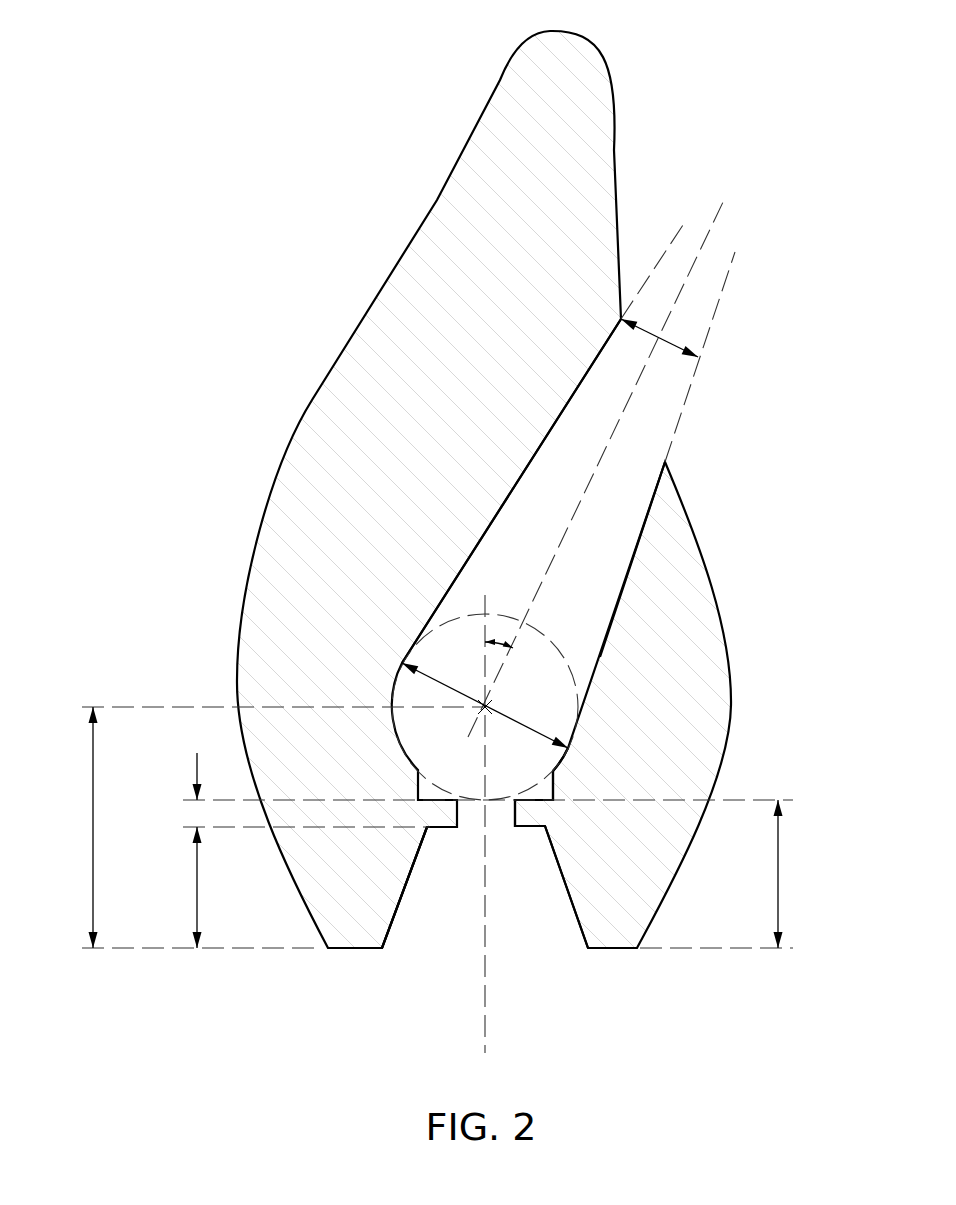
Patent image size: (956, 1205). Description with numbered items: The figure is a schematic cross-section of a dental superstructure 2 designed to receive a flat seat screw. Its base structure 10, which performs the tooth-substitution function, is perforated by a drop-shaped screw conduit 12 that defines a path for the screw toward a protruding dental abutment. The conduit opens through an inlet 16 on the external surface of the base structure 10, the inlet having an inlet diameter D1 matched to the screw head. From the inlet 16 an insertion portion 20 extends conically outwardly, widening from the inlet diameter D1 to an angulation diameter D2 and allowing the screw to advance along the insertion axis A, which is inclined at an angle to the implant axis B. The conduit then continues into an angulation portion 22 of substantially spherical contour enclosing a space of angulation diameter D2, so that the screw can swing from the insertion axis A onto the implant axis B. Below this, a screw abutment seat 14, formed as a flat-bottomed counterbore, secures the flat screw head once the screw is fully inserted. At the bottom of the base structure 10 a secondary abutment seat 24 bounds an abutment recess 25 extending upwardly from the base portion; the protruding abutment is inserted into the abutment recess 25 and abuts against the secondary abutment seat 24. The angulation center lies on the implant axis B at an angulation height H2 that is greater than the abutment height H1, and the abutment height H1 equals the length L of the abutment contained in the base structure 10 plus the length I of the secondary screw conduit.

The dental superstructure 2 is at (510, 520).
The base structure 10 is at (487, 207).
The drop-shaped screw conduit 12 is at (540, 445).
The screw abutment seat 14 is at (533, 800).
The inlet 16 is at (665, 462).
The insertion portion 20 is at (625, 585).
The angulation portion 22 is at (572, 740).
The secondary abutment seat 24 is at (397, 903).
The abutment recess 25 is at (473, 892).
The insertion axis A is at (722, 208).
The implant axis B is at (486, 1040).
The inlet diameter D1 is at (670, 350).
The angulation diameter D2 is at (523, 727).
The abutment height H1 is at (798, 874).
The angulation height H2 is at (75, 827).
The length of the secondary screw conduit I is at (197, 762).
The length of the protruding dental abutment L is at (187, 887).